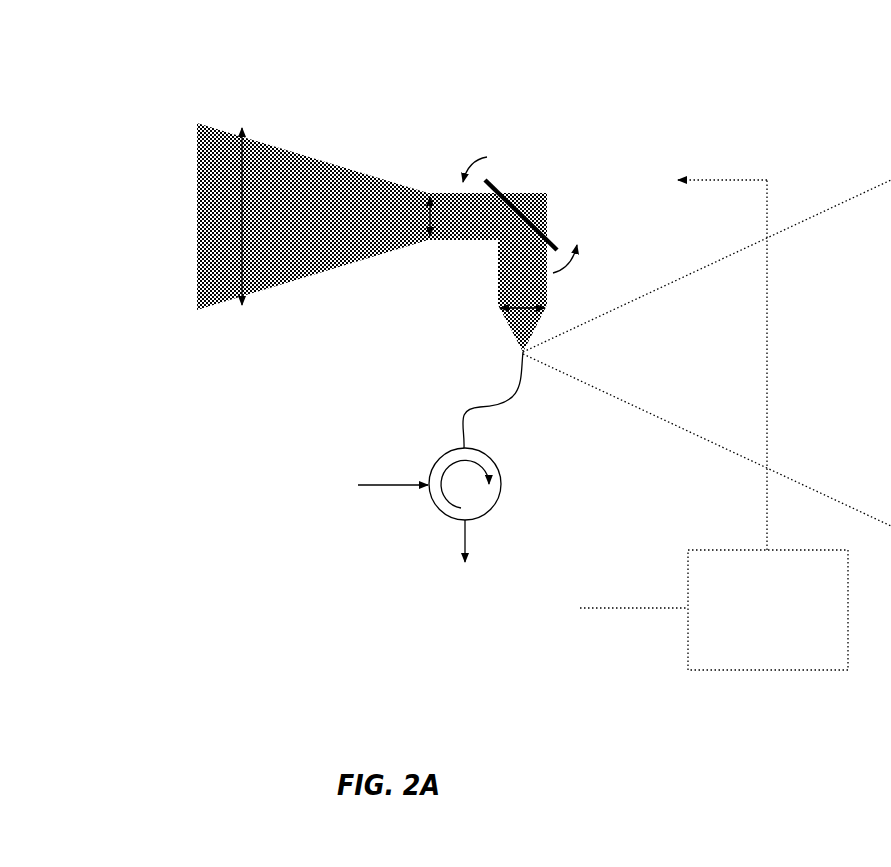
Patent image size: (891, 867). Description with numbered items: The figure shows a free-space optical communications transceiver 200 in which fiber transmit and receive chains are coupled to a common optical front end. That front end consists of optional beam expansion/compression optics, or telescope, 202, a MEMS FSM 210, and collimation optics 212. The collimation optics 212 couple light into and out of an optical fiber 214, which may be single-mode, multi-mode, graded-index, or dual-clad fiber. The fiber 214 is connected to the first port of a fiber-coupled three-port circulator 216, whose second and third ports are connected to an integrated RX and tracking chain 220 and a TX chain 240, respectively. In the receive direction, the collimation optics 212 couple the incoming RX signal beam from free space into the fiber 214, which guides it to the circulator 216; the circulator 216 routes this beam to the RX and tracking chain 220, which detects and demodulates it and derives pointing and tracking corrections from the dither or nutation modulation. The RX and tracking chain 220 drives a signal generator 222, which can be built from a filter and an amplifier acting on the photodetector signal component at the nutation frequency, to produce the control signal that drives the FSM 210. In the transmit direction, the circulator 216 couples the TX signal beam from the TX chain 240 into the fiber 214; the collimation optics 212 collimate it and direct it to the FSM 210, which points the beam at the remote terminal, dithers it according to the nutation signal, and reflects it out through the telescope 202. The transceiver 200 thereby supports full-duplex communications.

The free-space optical communications transceiver 200 is at (227, 612).
The beam expansion/compression optics (telescope) 202 is at (372, 268).
The MEMS FSM 210 is at (558, 205).
The collimation optics 212 is at (488, 317).
The optical fiber 214 is at (527, 406).
The fiber-coupled three-port circulator 216 is at (491, 495).
The integrated RX and tracking chain 220 is at (544, 606).
The signal generator 222 is at (788, 657).
The TX chain 240 is at (361, 502).